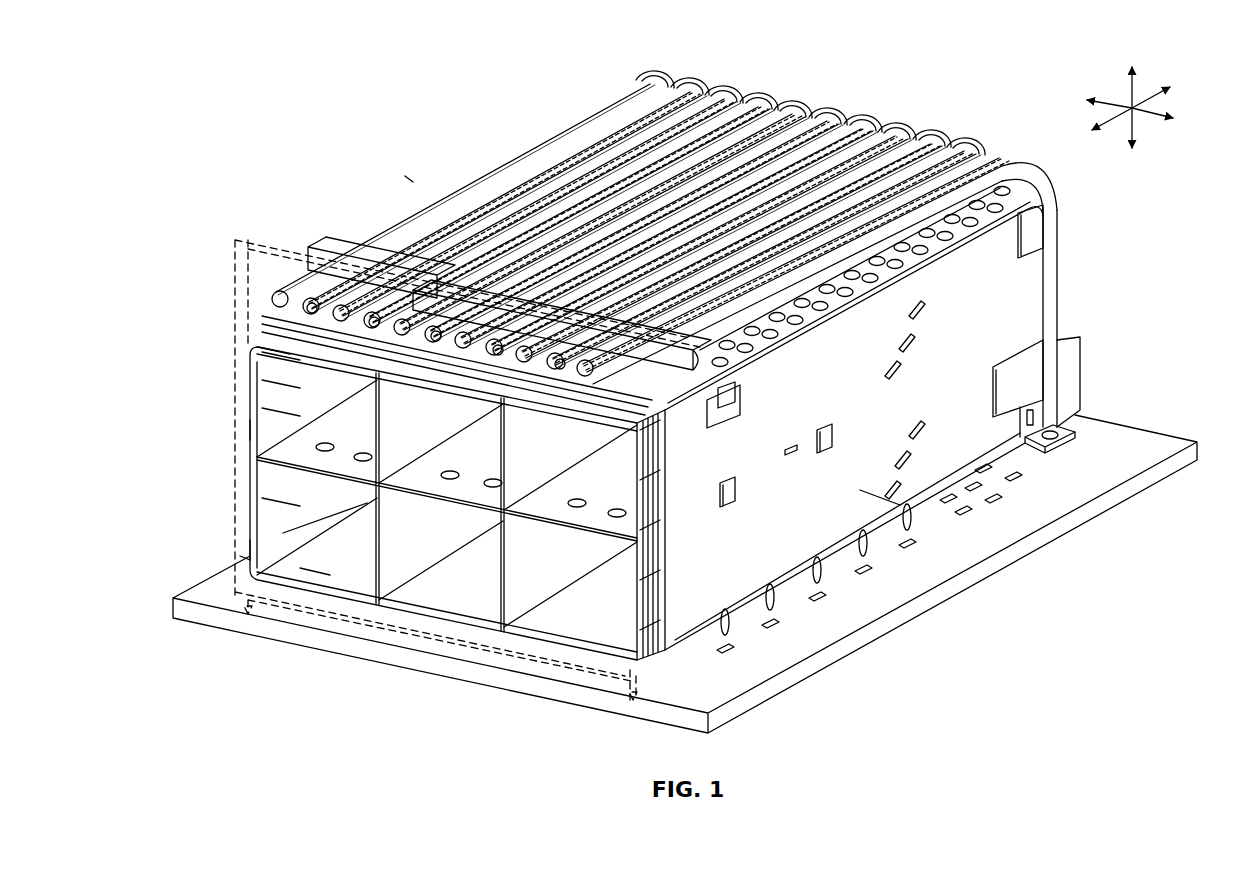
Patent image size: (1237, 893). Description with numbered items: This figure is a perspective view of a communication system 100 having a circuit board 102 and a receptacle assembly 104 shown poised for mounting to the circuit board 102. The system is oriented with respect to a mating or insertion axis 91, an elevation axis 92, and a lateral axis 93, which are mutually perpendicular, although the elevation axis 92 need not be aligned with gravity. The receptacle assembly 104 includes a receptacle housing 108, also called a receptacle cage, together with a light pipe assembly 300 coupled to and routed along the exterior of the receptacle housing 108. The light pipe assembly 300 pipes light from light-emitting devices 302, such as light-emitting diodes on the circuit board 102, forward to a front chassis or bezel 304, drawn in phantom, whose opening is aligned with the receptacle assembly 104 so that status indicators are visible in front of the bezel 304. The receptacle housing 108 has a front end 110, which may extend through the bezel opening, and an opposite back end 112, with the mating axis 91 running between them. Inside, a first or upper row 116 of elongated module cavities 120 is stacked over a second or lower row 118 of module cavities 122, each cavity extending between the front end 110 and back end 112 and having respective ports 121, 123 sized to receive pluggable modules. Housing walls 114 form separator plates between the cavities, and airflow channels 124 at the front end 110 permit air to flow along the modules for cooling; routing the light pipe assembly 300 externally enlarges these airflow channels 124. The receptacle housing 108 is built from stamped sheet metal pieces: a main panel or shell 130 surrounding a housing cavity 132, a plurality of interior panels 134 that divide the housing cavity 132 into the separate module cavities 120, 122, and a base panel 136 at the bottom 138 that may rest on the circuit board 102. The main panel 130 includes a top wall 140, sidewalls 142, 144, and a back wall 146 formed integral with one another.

The mating axis 91 is at (1148, 98).
The elevation axis 92 is at (1130, 95).
The lateral axis 93 is at (1152, 118).
The communication system 100 is at (413, 182).
The circuit board 102 is at (838, 615).
The receptacle assembly 104 is at (651, 347).
The receptacle housing 108 is at (1020, 280).
The front end 110 is at (255, 442).
The back end 112 is at (1045, 325).
The housing walls 114 is at (995, 195).
The first row 116 is at (250, 430).
The second row 118 is at (252, 546).
The upper module cavity 120 is at (278, 408).
The port 121 is at (267, 352).
The lower module cavity 122 is at (243, 560).
The port 123 is at (315, 575).
The airflow channel 124 is at (267, 378).
The main panel 130 is at (890, 240).
The housing cavity 132 is at (618, 642).
The interior panels 134 is at (517, 598).
The base panel 136 is at (455, 600).
The bottom 138 is at (698, 625).
The top wall 140 is at (950, 195).
The sidewall 142 is at (863, 483).
The sidewall 144 is at (300, 363).
The back wall 146 is at (1022, 185).
The light pipe assembly 300 is at (737, 75).
The light-emitting devices 302 is at (1067, 433).
The bezel 304 is at (268, 240).